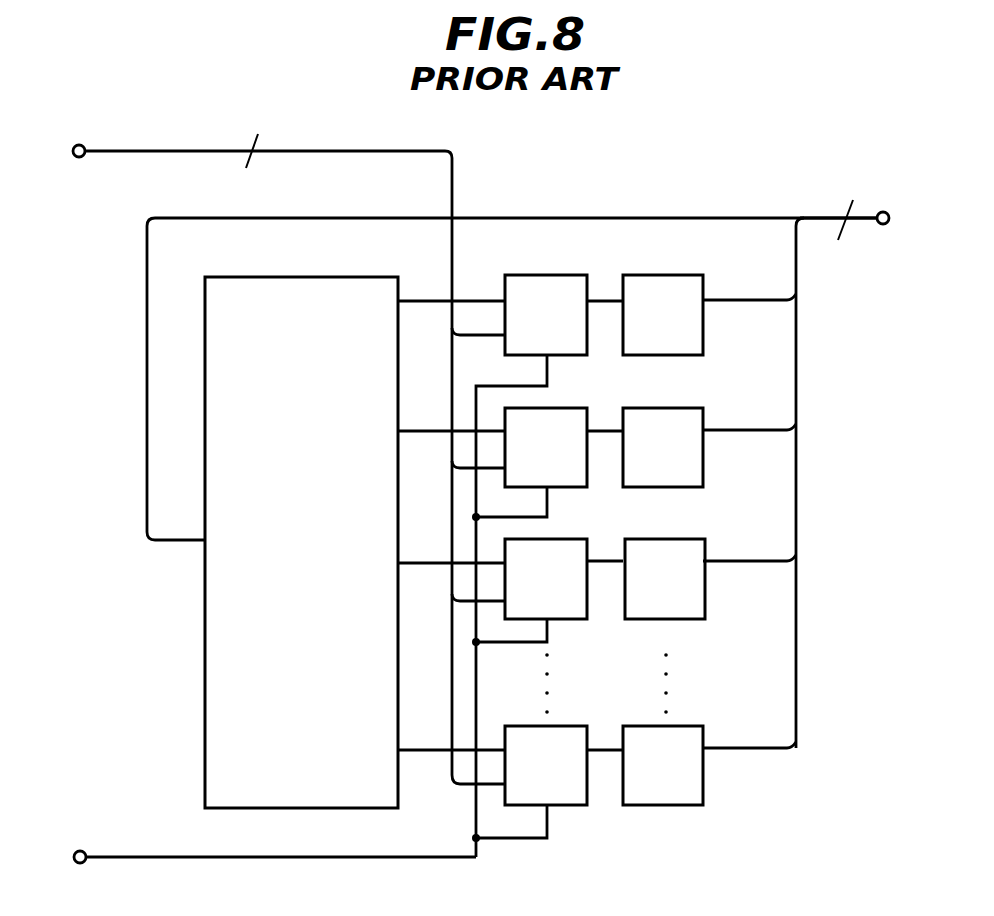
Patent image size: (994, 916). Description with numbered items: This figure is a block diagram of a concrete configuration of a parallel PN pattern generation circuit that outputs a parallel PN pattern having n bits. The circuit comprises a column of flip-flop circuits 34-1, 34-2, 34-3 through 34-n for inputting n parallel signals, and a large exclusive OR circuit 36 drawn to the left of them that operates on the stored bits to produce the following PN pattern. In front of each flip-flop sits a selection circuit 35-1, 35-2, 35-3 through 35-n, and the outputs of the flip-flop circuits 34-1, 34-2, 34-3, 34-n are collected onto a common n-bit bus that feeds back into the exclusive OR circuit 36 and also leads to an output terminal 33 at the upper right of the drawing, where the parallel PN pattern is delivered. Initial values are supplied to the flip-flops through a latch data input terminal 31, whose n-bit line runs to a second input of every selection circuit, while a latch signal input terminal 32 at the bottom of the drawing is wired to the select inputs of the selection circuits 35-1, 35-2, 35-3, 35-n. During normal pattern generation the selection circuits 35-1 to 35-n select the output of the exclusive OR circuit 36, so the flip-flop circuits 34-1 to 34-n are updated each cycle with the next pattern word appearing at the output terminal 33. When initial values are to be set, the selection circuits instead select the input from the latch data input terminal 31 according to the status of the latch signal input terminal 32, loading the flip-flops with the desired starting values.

The latch data input terminal 31 is at (79, 140).
The latch signal input terminal 32 is at (79, 845).
The output terminal (n-bit) 33 is at (881, 206).
The flip-flop circuit 34-1 is at (667, 267).
The flip-flop circuit 34-2 is at (676, 400).
The flip-flop circuit 34-3 is at (675, 532).
The flip-flop circuit 34-n is at (680, 717).
The selection circuit 35-1 is at (543, 268).
The selection circuit 35-2 is at (551, 401).
The selection circuit 35-3 is at (548, 532).
The selection circuit 35-n is at (556, 718).
The exclusive OR circuit 36 is at (195, 633).